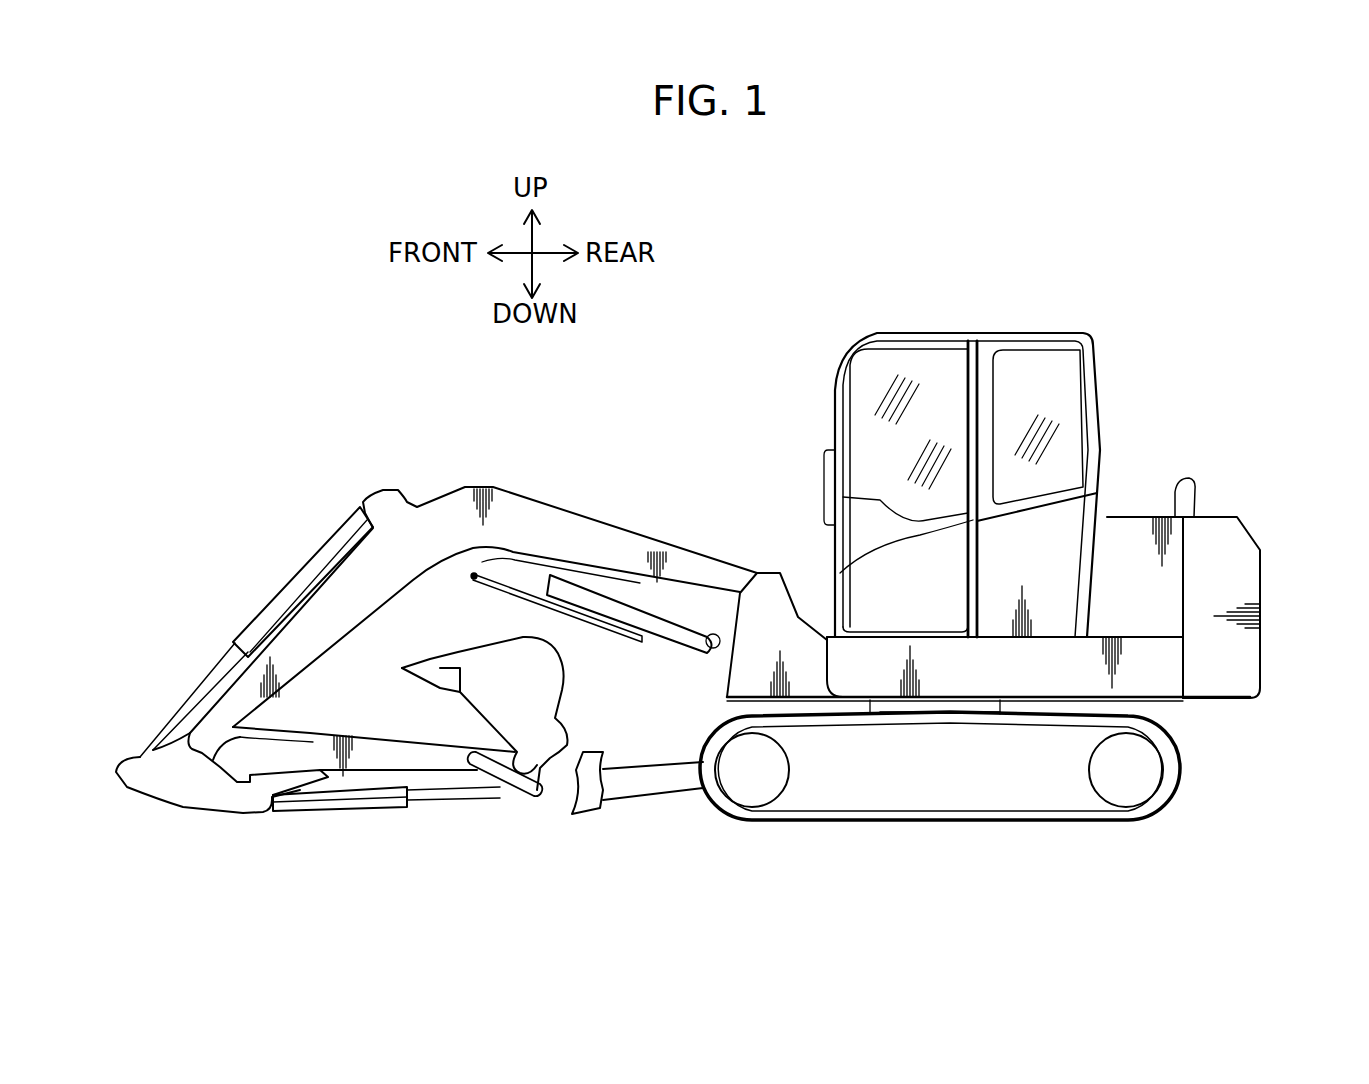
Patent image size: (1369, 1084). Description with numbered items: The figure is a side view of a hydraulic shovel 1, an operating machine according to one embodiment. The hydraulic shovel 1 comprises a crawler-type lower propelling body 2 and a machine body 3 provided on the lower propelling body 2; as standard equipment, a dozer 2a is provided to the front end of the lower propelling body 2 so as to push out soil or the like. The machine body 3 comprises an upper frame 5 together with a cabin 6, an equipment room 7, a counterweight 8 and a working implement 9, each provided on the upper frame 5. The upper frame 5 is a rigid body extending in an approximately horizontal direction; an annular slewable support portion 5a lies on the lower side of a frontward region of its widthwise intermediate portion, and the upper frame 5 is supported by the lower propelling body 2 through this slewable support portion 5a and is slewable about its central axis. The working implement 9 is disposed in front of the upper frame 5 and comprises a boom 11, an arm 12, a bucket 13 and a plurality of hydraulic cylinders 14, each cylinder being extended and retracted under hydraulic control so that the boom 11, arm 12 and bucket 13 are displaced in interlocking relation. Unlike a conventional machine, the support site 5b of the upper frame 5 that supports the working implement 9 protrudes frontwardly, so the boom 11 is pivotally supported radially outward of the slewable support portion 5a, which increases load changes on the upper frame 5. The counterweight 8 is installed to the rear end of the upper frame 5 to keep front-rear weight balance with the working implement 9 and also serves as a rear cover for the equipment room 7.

The hydraulic shovel 1 is at (1059, 248).
The lower propelling body 2 is at (1182, 762).
The dozer 2a is at (638, 768).
The machine body 3 is at (1199, 416).
The upper frame 5 is at (1160, 657).
The slewable support portion 5a is at (955, 703).
The support site 5b is at (766, 572).
The cabin 6 is at (918, 345).
The equipment room 7 is at (1140, 517).
The counterweight 8 is at (1230, 577).
The working implement 9 is at (591, 481).
The boom 11 is at (628, 527).
The arm 12 is at (366, 740).
The bucket 13 is at (482, 648).
The hydraulic cylinders 14 is at (302, 567).